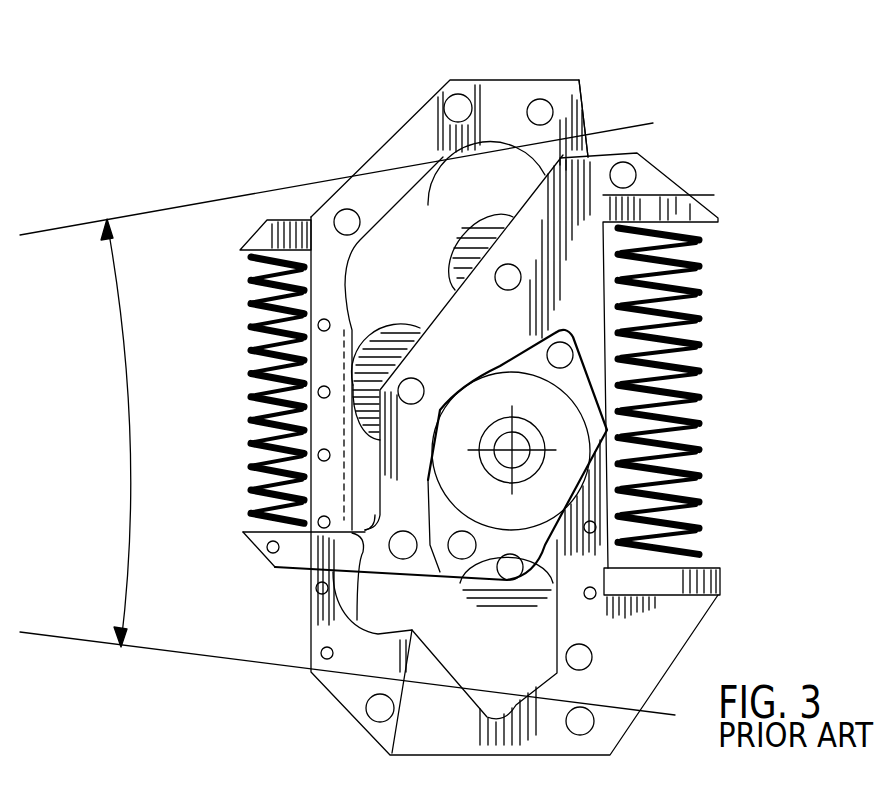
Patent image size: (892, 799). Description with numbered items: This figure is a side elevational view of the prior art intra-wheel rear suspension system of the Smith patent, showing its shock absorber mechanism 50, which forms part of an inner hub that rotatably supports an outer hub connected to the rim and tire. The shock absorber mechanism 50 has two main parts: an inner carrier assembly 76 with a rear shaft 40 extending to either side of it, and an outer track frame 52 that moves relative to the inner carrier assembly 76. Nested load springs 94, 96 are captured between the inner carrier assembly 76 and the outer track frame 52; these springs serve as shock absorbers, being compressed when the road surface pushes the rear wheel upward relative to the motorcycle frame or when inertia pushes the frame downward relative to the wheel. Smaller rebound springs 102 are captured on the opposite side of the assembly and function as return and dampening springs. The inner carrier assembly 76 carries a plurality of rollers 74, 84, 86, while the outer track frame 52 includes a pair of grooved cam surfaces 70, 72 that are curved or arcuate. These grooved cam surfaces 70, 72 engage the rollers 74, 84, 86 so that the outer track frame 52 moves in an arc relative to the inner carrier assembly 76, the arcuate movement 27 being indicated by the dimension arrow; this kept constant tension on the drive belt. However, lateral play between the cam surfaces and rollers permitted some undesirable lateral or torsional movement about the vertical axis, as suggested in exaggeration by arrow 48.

The arcuate movement 27 is at (347, 419).
The rear shaft 40 is at (510, 448).
The arrow 48 is at (490, 136).
The shock absorber mechanism 50 is at (569, 64).
The outer track frame 52 is at (572, 122).
The grooved cam surface 70 is at (320, 545).
The grooved cam surface 72 is at (560, 638).
The roller 74 is at (375, 358).
The inner carrier assembly 76 is at (612, 157).
The roller 84 is at (463, 232).
The roller 86 is at (510, 603).
The load spring 94 is at (698, 290).
The load spring 96 is at (688, 406).
The rebound spring 102 is at (250, 393).